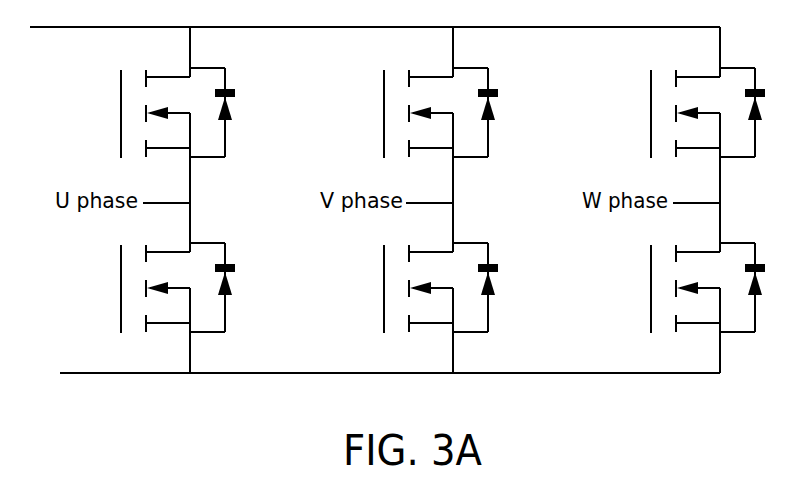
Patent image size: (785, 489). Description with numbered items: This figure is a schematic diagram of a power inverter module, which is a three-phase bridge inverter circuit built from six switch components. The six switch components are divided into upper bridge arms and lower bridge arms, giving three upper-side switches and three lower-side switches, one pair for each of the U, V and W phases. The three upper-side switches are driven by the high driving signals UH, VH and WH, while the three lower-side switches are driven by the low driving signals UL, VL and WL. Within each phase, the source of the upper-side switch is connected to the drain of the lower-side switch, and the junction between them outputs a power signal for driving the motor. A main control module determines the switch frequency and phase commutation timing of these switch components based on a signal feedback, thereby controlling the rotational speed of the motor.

The high driving signal UH is at (121, 113).
The low driving signal UL is at (121, 288).
The high driving signal VH is at (384, 113).
The low driving signal VL is at (384, 288).
The high driving signal WH is at (651, 113).
The low driving signal WL is at (651, 288).